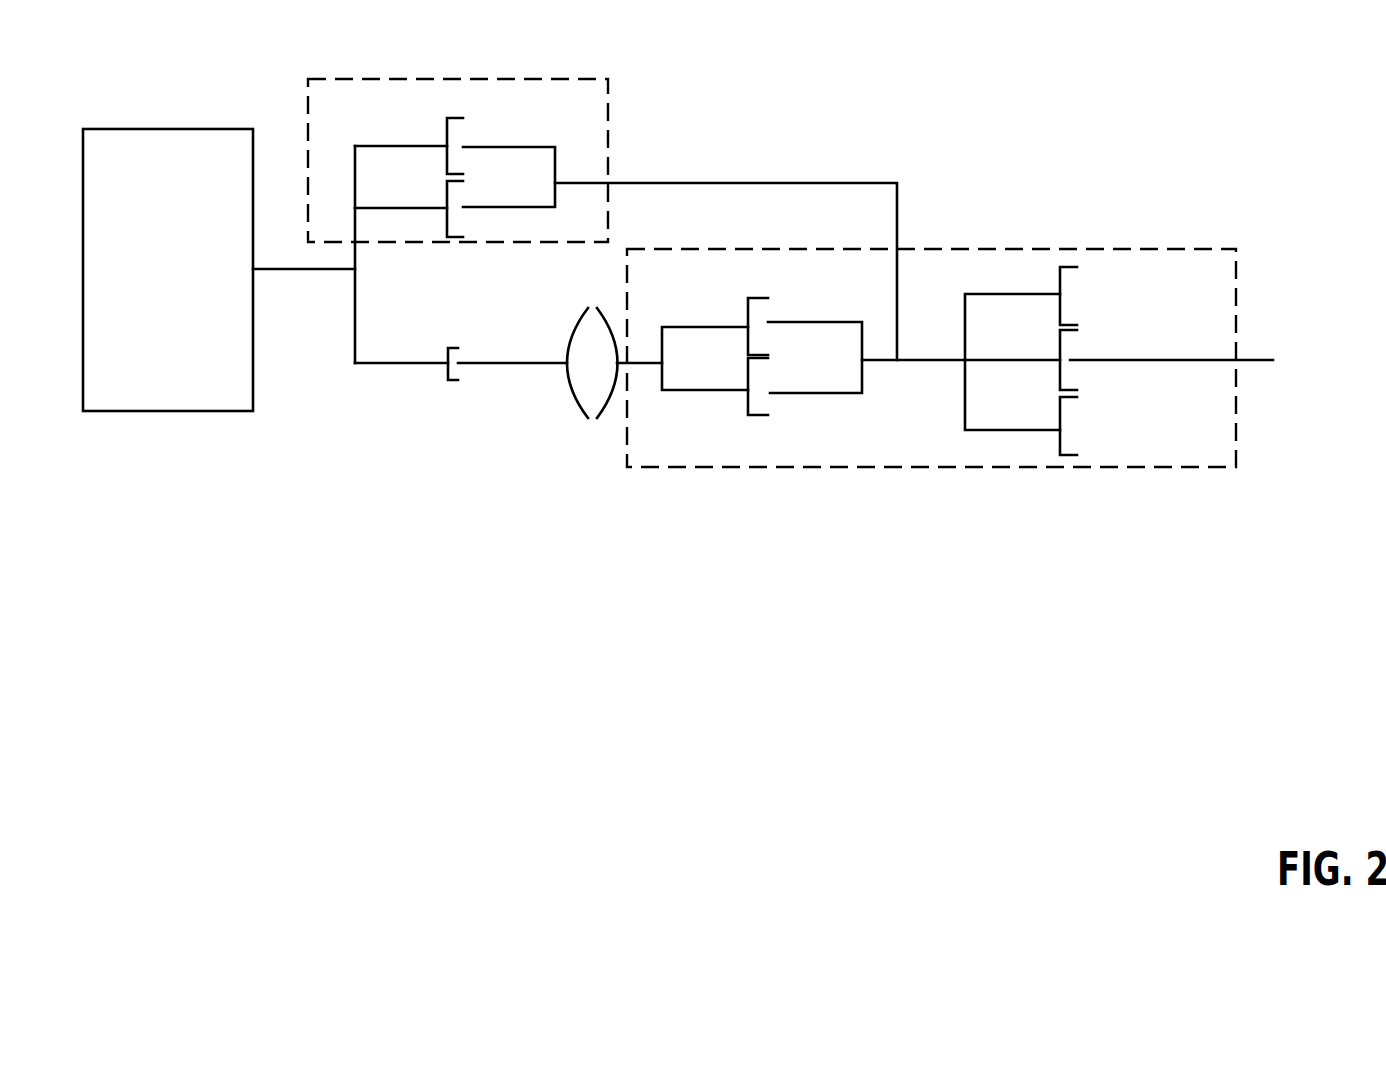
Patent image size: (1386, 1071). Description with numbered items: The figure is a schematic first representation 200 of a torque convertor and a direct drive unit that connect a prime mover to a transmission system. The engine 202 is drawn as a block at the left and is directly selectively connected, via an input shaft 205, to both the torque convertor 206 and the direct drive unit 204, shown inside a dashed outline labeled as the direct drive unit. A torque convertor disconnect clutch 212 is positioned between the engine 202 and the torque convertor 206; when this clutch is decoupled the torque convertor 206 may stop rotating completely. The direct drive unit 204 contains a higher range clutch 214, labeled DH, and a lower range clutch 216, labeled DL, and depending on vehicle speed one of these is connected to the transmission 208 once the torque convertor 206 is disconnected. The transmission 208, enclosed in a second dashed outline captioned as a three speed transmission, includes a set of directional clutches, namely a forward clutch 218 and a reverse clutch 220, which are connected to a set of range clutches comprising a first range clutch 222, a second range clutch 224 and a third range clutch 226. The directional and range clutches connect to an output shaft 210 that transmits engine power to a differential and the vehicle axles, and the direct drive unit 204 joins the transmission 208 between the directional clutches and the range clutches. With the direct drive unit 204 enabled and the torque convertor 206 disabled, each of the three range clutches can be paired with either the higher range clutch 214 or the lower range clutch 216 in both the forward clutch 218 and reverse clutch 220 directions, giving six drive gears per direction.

The first representation 200 is at (1318, 68).
The engine 202 is at (184, 282).
The direct drive unit 204 is at (580, 79).
The input shaft 205 is at (295, 270).
The torque convertor 206 is at (575, 395).
The transmission 208 is at (1012, 249).
The output shaft 210 is at (1255, 360).
The torque convertor disconnect clutch 212 is at (455, 382).
The higher range clutch (DH) 214 is at (528, 138).
The lower range clutch (DL) 216 is at (512, 213).
The forward clutch (FWD) 218 is at (828, 307).
The reverse clutch (REV) 220 is at (821, 402).
The first range clutch 222 is at (1108, 290).
The second range clutch 224 is at (1124, 367).
The third range clutch 226 is at (1116, 420).